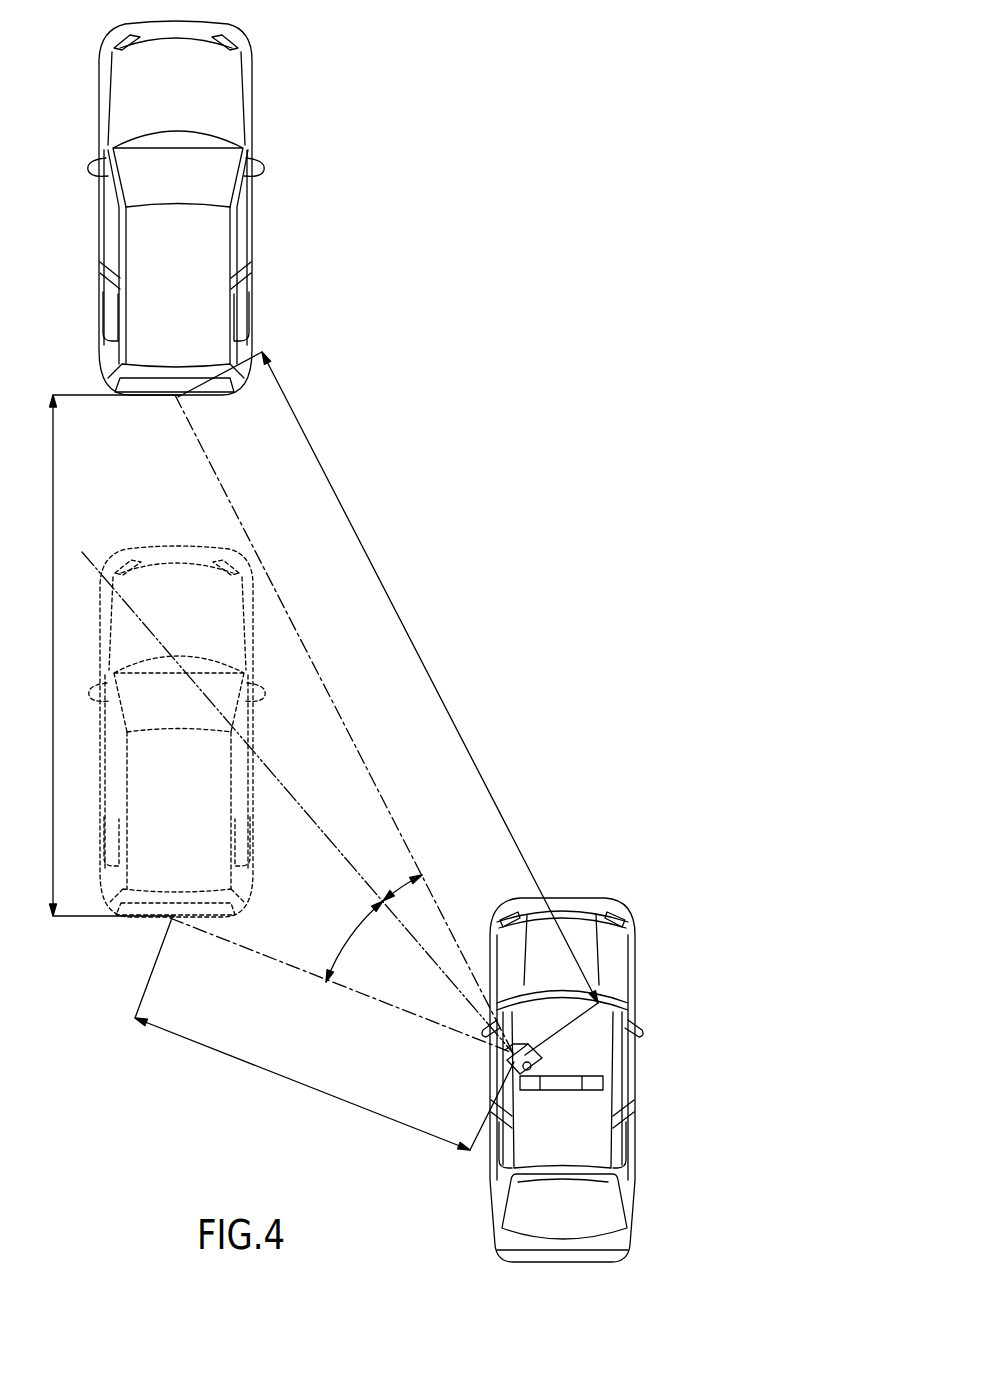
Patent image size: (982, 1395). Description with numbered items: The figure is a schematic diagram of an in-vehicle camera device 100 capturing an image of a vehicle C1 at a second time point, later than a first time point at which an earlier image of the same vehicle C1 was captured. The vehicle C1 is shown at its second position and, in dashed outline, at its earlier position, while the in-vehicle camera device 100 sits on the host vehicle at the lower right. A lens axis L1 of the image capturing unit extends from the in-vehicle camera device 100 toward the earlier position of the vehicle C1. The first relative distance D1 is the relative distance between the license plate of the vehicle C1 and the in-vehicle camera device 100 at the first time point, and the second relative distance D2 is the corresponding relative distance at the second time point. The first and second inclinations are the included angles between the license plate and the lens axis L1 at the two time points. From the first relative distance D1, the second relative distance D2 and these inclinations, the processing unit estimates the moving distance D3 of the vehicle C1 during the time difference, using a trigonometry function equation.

The vehicle C1 is at (247, 113).
The in-vehicle camera device 100 is at (546, 1062).
The lens axis L1 is at (288, 784).
The first relative distance D1 is at (324, 1034).
The second relative distance D2 is at (388, 703).
The moving distance D3 is at (96, 655).